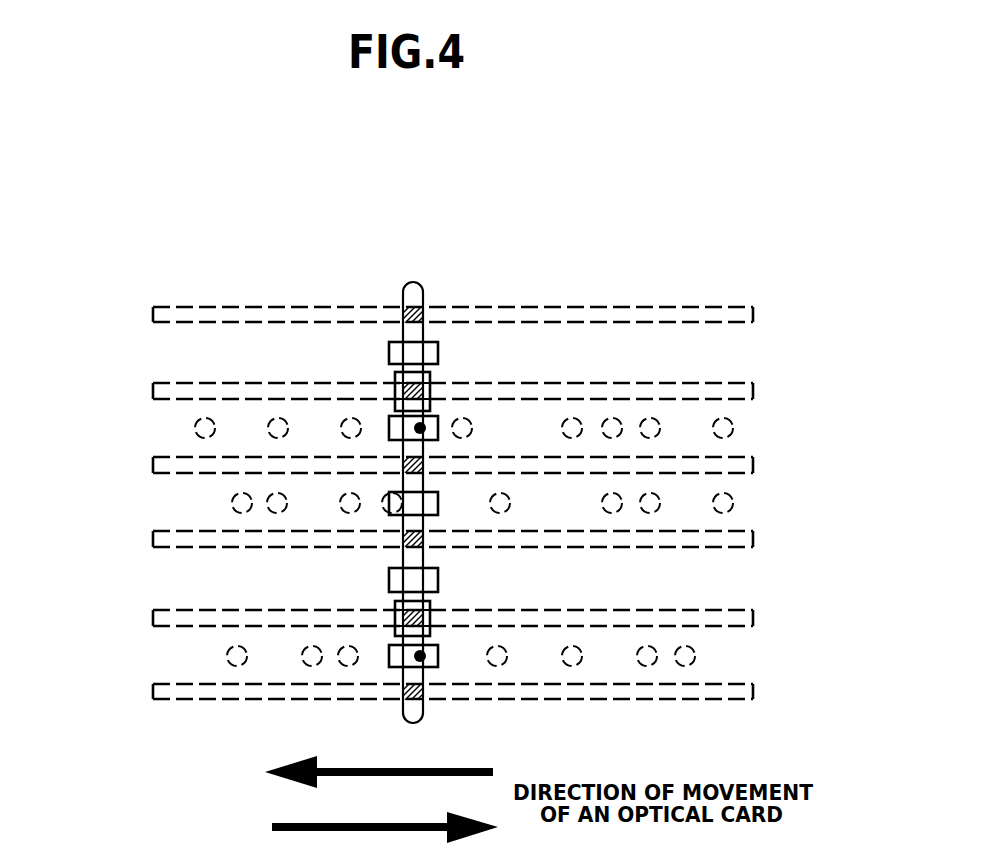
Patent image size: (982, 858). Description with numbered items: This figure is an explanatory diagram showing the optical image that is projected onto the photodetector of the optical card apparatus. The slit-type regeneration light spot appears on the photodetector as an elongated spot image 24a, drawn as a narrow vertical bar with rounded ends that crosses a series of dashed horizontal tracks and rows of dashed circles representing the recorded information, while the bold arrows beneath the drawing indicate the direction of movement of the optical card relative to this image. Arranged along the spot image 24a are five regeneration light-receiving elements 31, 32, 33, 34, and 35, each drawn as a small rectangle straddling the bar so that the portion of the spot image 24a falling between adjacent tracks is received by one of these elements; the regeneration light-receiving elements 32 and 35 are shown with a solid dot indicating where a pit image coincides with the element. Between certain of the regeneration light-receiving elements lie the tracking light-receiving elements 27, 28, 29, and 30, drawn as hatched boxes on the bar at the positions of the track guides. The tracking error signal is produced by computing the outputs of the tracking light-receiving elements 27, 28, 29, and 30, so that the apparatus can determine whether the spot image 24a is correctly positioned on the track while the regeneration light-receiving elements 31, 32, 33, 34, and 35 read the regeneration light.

The spot image 24a is at (403, 302).
The tracking light-receiving element 27 is at (430, 374).
The tracking light-receiving element 28 is at (432, 406).
The tracking light-receiving element 29 is at (432, 603).
The tracking light-receiving element 30 is at (433, 627).
The regeneration light-receiving element 31 is at (389, 350).
The regeneration light-receiving element 32 is at (389, 423).
The regeneration light-receiving element 33 is at (389, 500).
The regeneration light-receiving element 34 is at (389, 578).
The regeneration light-receiving element 35 is at (389, 650).